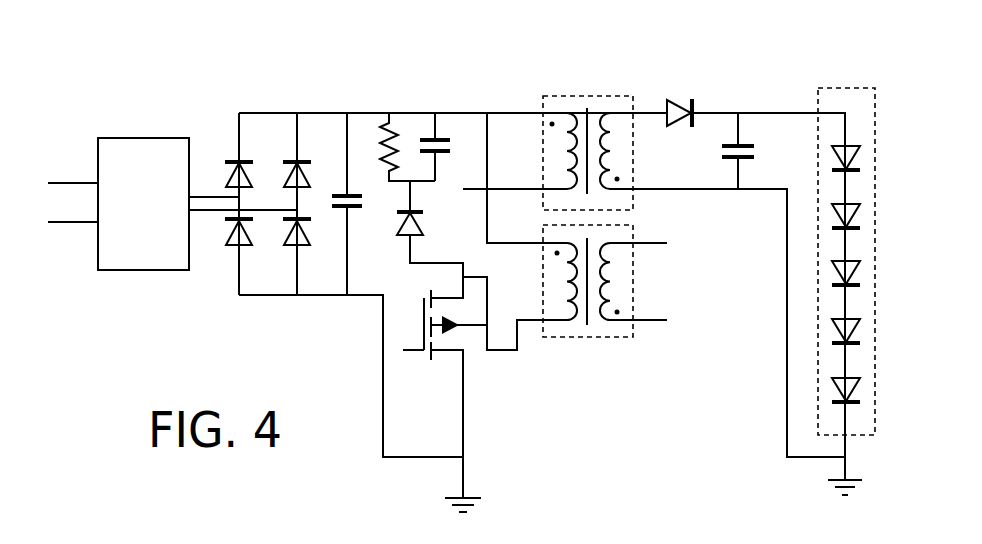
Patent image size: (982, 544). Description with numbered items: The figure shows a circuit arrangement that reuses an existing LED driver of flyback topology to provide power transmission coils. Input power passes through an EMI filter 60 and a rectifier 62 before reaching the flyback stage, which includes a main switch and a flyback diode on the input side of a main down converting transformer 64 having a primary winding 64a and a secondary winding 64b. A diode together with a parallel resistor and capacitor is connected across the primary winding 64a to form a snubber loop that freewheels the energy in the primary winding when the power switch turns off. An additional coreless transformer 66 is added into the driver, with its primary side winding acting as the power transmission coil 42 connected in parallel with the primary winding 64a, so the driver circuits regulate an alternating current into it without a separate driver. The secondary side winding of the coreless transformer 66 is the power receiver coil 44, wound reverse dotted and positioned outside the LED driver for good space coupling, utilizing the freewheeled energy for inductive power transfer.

The rectifier 62 is at (112, 89).
The EMI filter 60 is at (143, 204).
The main down converting transformer 64 is at (598, 95).
The primary winding 64a is at (557, 107).
The secondary winding 64b is at (622, 107).
The coreless transformer 66 is at (595, 338).
The power transmission coil 42 is at (557, 322).
The power receiver coil 44 is at (620, 322).